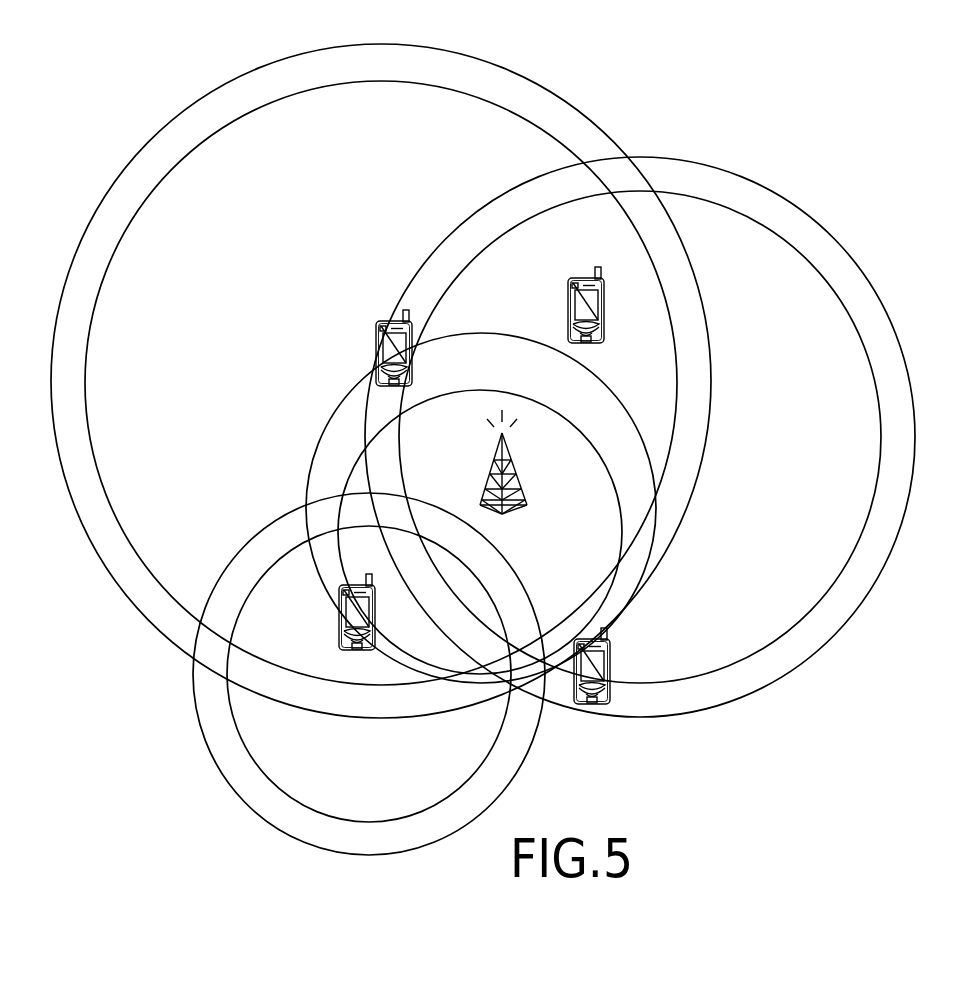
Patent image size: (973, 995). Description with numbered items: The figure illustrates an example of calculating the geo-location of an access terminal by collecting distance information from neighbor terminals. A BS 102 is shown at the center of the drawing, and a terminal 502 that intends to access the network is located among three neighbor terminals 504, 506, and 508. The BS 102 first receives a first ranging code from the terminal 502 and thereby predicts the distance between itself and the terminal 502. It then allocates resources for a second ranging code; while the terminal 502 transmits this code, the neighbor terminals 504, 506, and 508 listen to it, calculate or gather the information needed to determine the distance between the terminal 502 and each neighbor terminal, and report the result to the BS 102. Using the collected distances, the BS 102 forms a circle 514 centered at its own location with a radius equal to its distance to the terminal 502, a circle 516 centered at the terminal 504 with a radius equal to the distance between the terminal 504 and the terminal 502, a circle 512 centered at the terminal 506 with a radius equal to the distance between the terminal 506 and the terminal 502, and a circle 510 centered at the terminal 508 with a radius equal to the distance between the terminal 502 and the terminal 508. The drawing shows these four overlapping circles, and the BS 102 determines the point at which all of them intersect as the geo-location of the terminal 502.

The BS 102 is at (519, 481).
The terminal 502 is at (672, 669).
The neighbor terminal 504 is at (439, 614).
The neighbor terminal 506 is at (449, 348).
The neighbor terminal 508 is at (667, 305).
The circle 510 is at (916, 432).
The circle 512 is at (713, 378).
The circle 514 is at (590, 392).
The circle 516 is at (240, 552).